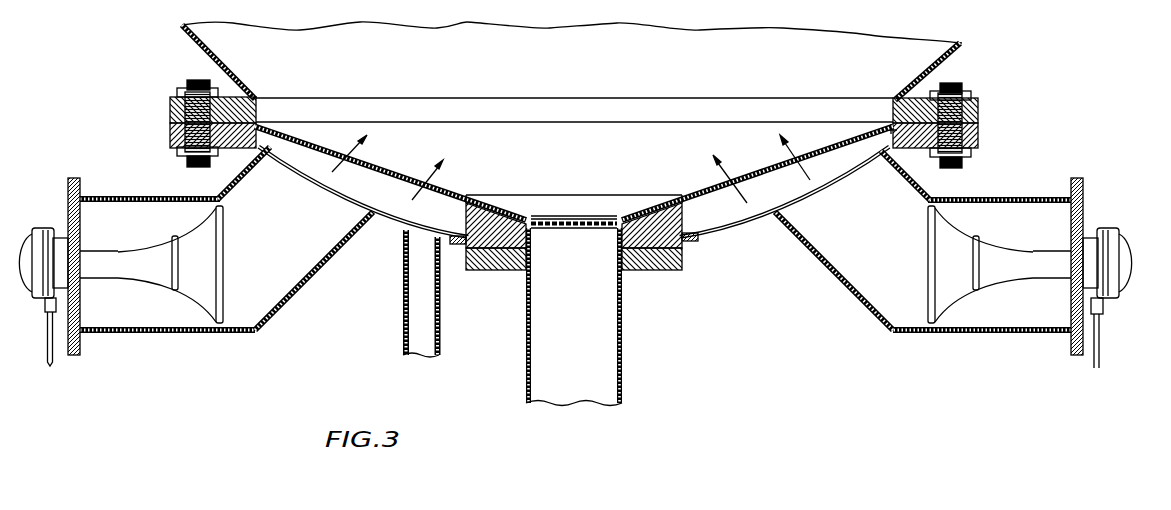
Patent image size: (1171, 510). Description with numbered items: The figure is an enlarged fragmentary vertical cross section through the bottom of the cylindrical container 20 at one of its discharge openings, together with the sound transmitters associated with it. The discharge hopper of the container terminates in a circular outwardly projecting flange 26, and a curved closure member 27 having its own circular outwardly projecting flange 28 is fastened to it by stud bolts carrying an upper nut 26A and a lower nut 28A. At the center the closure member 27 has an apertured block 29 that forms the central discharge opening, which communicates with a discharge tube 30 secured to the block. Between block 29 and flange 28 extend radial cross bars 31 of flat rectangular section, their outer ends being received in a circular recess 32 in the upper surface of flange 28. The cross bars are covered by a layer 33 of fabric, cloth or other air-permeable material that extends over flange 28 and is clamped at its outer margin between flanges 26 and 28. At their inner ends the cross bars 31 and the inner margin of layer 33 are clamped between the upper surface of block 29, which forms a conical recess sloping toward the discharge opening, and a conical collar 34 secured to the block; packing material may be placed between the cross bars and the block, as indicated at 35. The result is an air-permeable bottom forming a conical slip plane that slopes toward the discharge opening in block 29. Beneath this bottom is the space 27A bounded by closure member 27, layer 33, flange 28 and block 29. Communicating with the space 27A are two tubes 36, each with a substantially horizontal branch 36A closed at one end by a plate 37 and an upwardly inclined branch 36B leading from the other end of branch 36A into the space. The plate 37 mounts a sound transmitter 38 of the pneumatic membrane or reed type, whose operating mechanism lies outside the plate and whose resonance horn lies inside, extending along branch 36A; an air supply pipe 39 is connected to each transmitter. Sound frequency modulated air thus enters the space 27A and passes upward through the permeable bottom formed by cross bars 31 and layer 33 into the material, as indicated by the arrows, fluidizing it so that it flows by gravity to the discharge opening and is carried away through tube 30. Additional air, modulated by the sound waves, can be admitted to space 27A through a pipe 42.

The cylindrical container 20 is at (182, 31).
The circular outwardly projecting flange 26 is at (170, 108).
The upper nut 26A is at (182, 89).
The circular outwardly projecting flange of closure member 28 is at (170, 138).
The lower nut 28A is at (182, 153).
The circular recess 32 is at (895, 130).
The layer of air-permeable material 33 is at (402, 180).
The packing material 35 is at (690, 210).
The radial cross bars 31 is at (390, 215).
The conical collar 34 is at (582, 203).
The central apertured block 29 is at (684, 230).
The space 27A is at (453, 230).
The curved closure member 27 is at (720, 240).
The discharge tube 30 is at (625, 387).
The pipe 42 is at (403, 333).
The tube 36 is at (575, 262).
The substantially horizontal branch 36A is at (193, 331).
The upwardly inclined branch 36B is at (272, 350).
The plate 37 is at (70, 335).
The sound transmitter 38 is at (33, 250).
The air supply pipe 39 is at (50, 350).